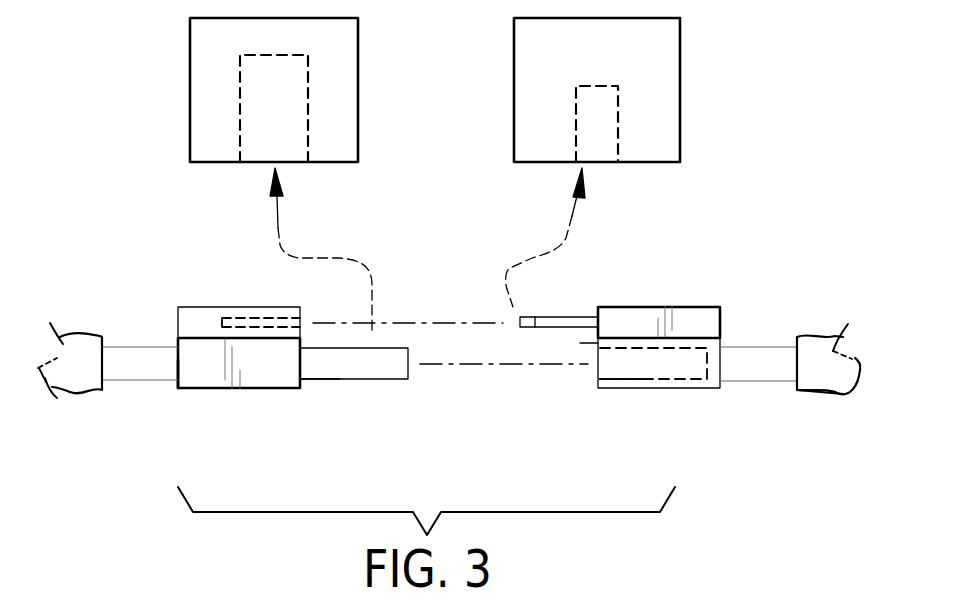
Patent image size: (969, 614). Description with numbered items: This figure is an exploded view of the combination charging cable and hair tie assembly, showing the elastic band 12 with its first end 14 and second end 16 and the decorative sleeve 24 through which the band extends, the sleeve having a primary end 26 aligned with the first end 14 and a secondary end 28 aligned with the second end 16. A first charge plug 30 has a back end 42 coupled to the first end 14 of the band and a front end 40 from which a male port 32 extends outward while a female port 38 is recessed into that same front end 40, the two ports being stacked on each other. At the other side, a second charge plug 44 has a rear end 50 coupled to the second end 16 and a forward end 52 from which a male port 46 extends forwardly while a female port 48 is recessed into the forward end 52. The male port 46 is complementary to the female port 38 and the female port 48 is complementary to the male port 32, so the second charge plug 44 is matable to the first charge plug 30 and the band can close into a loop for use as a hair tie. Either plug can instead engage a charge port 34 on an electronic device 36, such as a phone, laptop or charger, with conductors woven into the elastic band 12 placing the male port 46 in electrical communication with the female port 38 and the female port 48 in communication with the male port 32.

The elastic band 12 is at (449, 318).
The first end 14 is at (221, 286).
The second end 16 is at (665, 411).
The decorative sleeve 24 is at (816, 425).
The primary end 26 is at (84, 400).
The secondary end 28 is at (826, 308).
The first charge plug 30 is at (239, 397).
The male port 32 is at (354, 402).
The charge port 34 is at (633, 149).
The electronic device 36 is at (434, 90).
The female port 38 is at (245, 191).
The front end 40 is at (311, 432).
The back end 42 is at (126, 326).
The second charge plug 44 is at (653, 407).
The male port 46 is at (566, 275).
The female port 48 is at (623, 435).
The rear end 50 is at (670, 280).
The forward end 52 is at (550, 387).